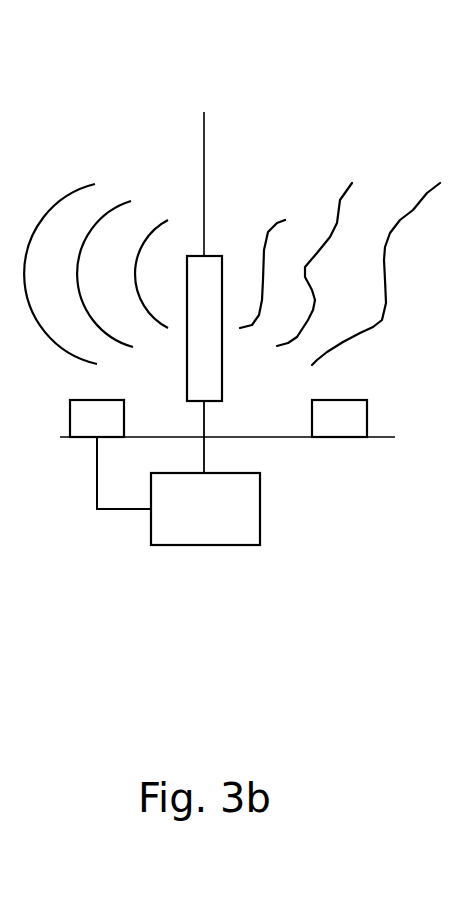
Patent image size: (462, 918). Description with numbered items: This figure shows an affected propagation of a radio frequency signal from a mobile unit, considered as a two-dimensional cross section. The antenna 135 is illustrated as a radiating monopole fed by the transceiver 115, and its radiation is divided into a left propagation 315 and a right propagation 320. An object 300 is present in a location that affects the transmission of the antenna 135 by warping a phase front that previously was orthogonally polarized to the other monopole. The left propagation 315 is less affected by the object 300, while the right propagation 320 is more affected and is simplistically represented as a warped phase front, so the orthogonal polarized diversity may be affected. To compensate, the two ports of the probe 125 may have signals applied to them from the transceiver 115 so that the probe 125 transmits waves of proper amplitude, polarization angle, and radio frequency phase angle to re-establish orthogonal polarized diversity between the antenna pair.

The left propagation 315 is at (78, 148).
The right propagation 320 is at (330, 148).
The first antenna 135 is at (207, 241).
The probe 125 is at (89, 471).
The object 300 is at (340, 437).
The transceiver 115 is at (206, 545).